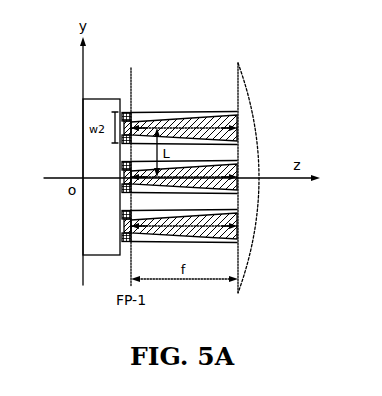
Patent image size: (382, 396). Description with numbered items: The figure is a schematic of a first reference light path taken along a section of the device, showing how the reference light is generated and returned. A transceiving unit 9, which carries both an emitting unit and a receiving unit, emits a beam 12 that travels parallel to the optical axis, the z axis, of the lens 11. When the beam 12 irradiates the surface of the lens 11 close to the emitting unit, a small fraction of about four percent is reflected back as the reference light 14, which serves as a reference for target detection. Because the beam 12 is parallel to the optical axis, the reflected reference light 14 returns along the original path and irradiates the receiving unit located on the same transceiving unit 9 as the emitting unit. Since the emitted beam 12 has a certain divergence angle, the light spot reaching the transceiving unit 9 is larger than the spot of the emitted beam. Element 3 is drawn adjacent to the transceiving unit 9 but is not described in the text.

The light source array / substrate 3 is at (105, 98).
The transceiving unit 9 is at (131, 117).
The reference light 14 is at (160, 121).
The beam emitted by the emitting unit 12 is at (187, 121).
The lens 11 is at (247, 128).